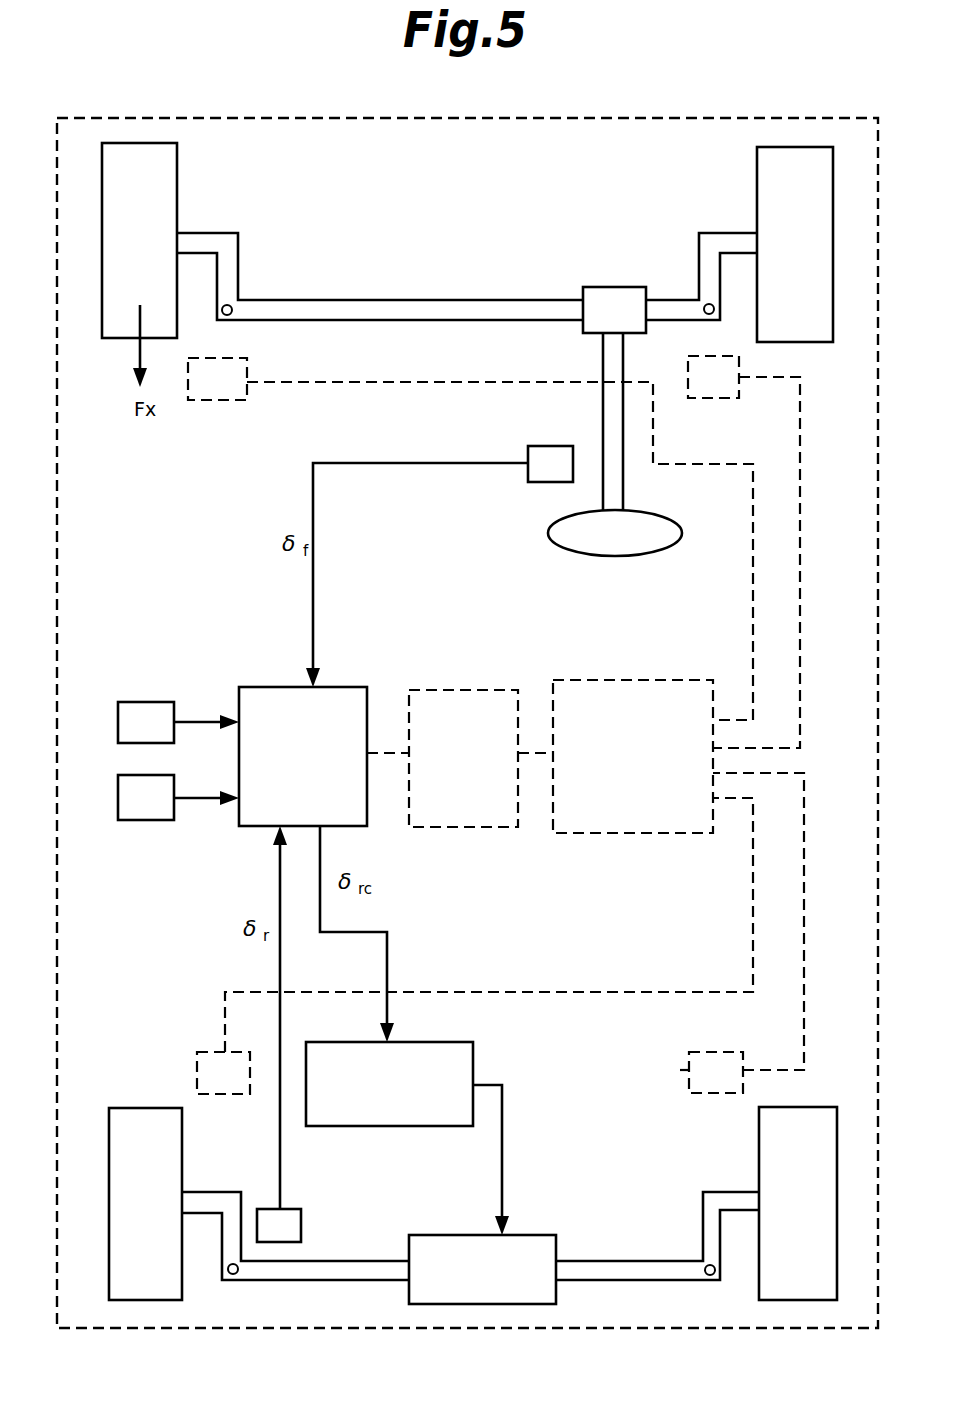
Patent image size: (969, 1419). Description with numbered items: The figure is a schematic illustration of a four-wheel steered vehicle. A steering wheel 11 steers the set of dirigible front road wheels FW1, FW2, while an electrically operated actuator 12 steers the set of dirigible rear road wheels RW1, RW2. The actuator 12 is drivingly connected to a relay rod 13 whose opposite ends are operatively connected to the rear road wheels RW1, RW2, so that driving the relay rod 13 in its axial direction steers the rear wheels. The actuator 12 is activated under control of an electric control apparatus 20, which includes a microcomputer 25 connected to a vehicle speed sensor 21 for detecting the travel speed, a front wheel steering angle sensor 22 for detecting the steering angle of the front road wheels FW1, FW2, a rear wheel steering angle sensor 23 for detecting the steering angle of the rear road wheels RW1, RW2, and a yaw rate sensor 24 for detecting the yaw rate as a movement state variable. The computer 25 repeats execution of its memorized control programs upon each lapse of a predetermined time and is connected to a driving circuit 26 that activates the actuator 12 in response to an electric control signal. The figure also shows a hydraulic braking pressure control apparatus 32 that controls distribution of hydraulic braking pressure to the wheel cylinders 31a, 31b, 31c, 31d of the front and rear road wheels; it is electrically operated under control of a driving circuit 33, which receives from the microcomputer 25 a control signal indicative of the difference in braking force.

The steering wheel 11 is at (675, 520).
The electrically operated actuator 12 is at (520, 1235).
The relay rod 13 is at (638, 1258).
The electric control apparatus 20 is at (262, 582).
The vehicle speed sensor 21 is at (165, 702).
The front wheel steering angle sensor 22 is at (548, 482).
The rear wheel steering angle sensor 23 is at (301, 1228).
The yaw rate sensor 24 is at (160, 820).
The microcomputer 25 is at (287, 687).
The driving circuit 26 is at (473, 1077).
The wheel cylinder 31a is at (215, 400).
The wheel cylinder 31b is at (695, 398).
The wheel cylinder 31c is at (205, 1094).
The wheel cylinder 31d is at (680, 1068).
The hydraulic braking pressure control apparatus 32 is at (615, 680).
The driving circuit 33 is at (449, 690).
The front road wheel FW1 is at (177, 203).
The front road wheel FW2 is at (757, 207).
The rear road wheel RW1 is at (150, 1108).
The rear road wheel RW2 is at (759, 1178).